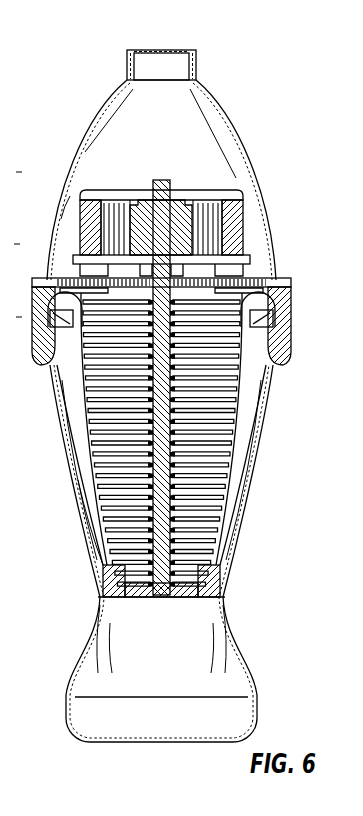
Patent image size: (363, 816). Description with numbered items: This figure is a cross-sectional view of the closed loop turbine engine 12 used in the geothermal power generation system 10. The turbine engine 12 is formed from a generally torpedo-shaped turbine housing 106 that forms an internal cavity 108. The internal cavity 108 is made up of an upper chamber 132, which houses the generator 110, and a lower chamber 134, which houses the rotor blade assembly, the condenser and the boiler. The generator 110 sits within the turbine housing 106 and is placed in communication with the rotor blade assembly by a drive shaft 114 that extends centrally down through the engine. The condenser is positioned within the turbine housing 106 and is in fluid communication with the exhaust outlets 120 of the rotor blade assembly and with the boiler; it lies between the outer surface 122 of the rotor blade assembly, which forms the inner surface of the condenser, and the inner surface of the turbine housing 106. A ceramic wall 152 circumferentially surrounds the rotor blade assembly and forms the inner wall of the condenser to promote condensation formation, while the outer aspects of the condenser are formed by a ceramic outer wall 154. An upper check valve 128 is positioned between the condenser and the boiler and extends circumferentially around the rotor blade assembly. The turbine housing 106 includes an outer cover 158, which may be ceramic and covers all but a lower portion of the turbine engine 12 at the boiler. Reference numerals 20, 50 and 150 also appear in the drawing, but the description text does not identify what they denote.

The geothermal power generation system 10 is at (11, 166).
The turbine engine 12 is at (228, 103).
The housing 20 is at (10, 238).
The heat dissipation assembly 50 is at (11, 311).
The turbine housing 106 is at (250, 491).
The internal cavity 108 is at (252, 389).
The generator 110 is at (238, 207).
The drive shaft 114 is at (168, 270).
The exhaust outlet 120 is at (228, 293).
The outer surface of the rotor blade assembly 122 is at (88, 421).
The upper check valve 128 is at (100, 588).
The upper chamber 132 is at (208, 160).
The lower chamber 134 is at (67, 391).
The fin 150 is at (90, 447).
The ceramic wall 152 is at (100, 467).
The ceramic outer wall 154 is at (78, 501).
The outer cover 158 is at (82, 536).